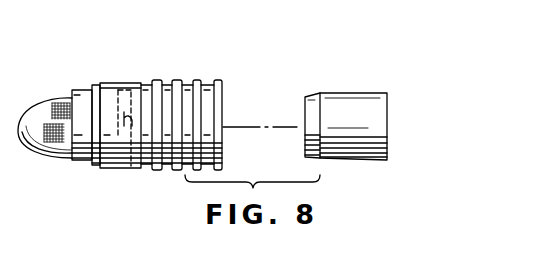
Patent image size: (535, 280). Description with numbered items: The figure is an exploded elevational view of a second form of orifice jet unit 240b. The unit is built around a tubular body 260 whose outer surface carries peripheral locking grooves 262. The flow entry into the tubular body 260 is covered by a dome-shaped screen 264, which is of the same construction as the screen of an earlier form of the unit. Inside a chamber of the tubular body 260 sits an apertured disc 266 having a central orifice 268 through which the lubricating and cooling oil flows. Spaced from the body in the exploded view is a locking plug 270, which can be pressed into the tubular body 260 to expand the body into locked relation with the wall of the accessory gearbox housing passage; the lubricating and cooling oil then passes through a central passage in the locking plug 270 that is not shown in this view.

The orifice jet unit 240b is at (112, 182).
The tubular body 260 is at (113, 85).
The peripheral locking grooves 262 is at (198, 80).
The dome-shaped screen 264 is at (48, 158).
The apertured disc 266 is at (123, 172).
The central orifice 268 is at (142, 96).
The locking plug 270 is at (360, 160).